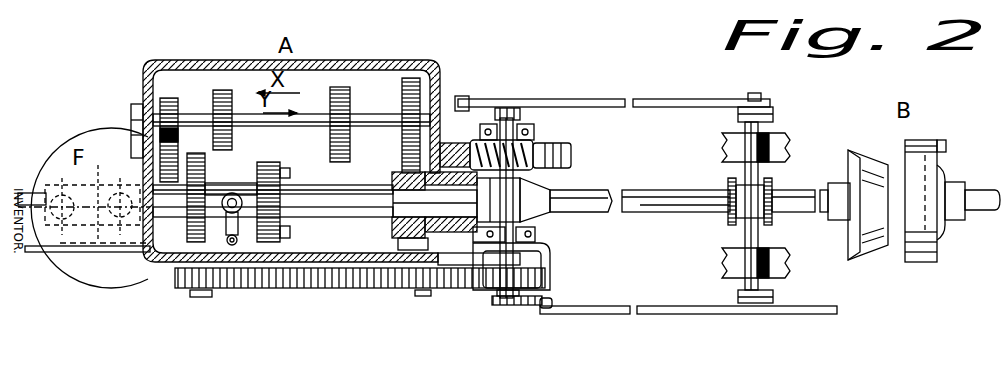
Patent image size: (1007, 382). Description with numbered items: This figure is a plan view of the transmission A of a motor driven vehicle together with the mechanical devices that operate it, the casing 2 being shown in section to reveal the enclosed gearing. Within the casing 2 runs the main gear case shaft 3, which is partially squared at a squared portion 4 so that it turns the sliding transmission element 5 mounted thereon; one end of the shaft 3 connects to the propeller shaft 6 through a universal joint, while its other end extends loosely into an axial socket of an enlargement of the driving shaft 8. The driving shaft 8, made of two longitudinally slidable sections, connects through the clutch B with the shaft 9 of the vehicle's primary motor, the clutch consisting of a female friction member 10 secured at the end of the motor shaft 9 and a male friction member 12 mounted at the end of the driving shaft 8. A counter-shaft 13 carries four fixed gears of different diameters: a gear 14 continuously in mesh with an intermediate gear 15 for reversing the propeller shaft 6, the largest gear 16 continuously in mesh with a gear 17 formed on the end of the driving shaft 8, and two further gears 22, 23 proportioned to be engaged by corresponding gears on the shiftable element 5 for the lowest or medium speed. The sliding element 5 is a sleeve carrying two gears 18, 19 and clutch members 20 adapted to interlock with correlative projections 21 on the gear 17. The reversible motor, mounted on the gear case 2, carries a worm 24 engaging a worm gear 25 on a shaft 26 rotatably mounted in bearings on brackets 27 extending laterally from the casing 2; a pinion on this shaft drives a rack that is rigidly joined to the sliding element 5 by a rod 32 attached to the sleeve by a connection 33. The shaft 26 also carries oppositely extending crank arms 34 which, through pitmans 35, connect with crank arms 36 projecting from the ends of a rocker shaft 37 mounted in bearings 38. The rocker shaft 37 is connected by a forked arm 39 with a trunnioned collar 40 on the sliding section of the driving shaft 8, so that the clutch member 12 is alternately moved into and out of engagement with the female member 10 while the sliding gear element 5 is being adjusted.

The casing 2 is at (398, 61).
The main gear case shaft 3 is at (341, 193).
The squared portion 4 is at (366, 212).
The sliding transmission element 5 is at (220, 186).
The propeller shaft 6 is at (33, 170).
The driving shaft 8 is at (588, 190).
The motor shaft 9 is at (992, 210).
The female friction member 10 is at (925, 260).
The male friction member 12 is at (875, 252).
The counter-shaft 13 is at (283, 120).
The gear 14 is at (148, 97).
The intermediate gear 15 is at (118, 133).
The largest gear 16 is at (420, 83).
The gear 17 is at (413, 238).
The gear 18 is at (192, 153).
The gear 19 is at (230, 277).
The clutch members 20 is at (290, 173).
The projections 21 is at (392, 173).
The gear 22 is at (224, 90).
The gear 23 is at (343, 87).
The worm 24 is at (535, 140).
The worm gear 25 is at (571, 150).
The shaft 26 is at (571, 208).
The brackets 27 is at (530, 126).
The rod 32 is at (42, 253).
The connection 33 is at (230, 222).
The crank arms 34 is at (503, 108).
The pitmans 35 is at (652, 101).
The crank arms 36 is at (763, 100).
The rocker shaft 37 is at (760, 178).
The bearings 38 is at (790, 148).
The forked arm 39 is at (770, 212).
The trunnioned collar 40 is at (732, 217).